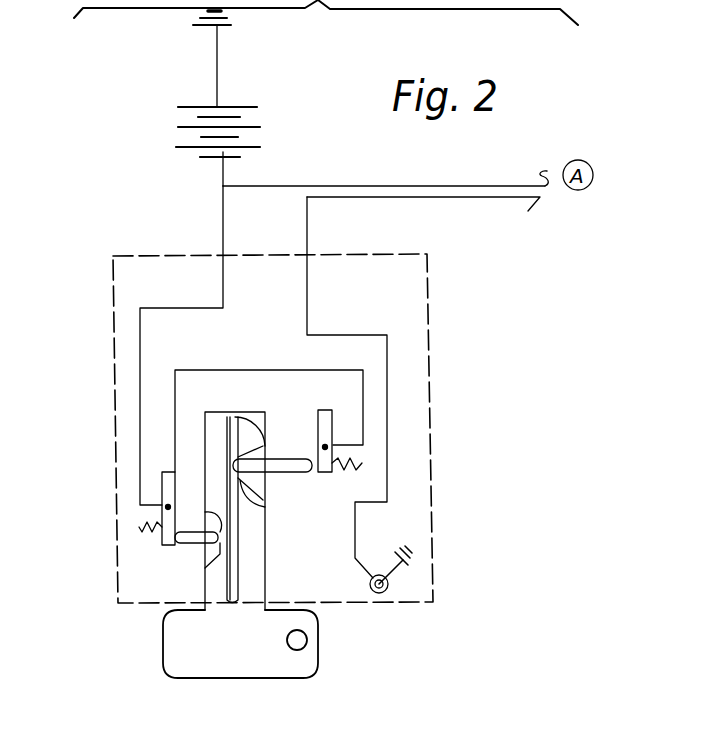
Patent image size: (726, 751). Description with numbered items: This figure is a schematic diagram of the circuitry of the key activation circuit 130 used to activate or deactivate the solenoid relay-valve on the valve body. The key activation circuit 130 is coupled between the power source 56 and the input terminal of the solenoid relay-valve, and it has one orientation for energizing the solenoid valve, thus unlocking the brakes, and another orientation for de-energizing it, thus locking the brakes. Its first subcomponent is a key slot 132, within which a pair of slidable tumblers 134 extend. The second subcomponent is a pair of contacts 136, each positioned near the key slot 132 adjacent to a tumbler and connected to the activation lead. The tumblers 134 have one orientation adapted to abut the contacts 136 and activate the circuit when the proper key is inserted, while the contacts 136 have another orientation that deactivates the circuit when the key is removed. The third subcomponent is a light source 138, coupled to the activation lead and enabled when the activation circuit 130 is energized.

The power source 56 is at (167, 131).
The key activation circuit 130 is at (427, 290).
The key slot 132 is at (263, 410).
The slidable tumblers 134 is at (187, 542).
The contacts 136 is at (313, 412).
The light source 138 is at (380, 572).